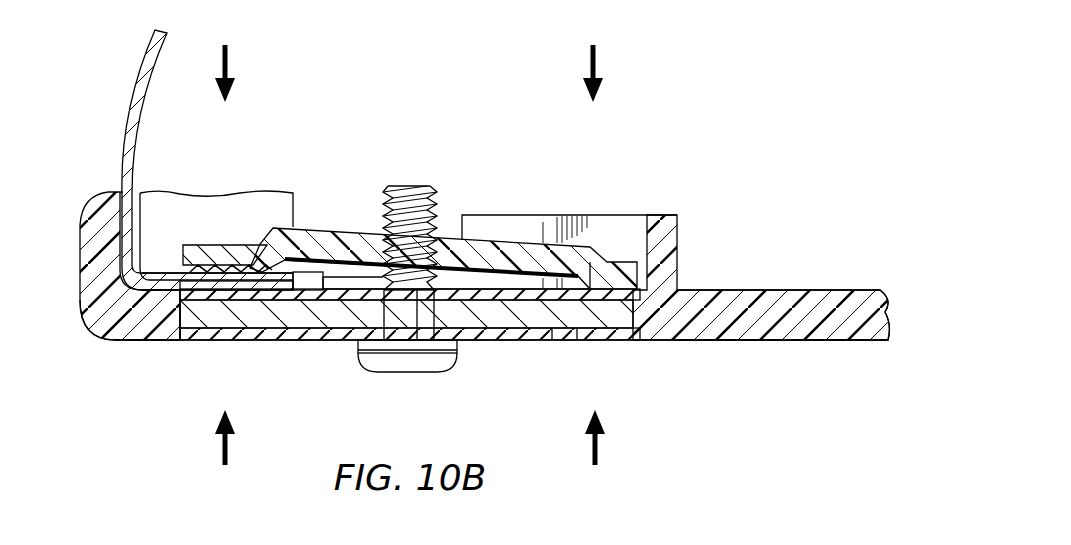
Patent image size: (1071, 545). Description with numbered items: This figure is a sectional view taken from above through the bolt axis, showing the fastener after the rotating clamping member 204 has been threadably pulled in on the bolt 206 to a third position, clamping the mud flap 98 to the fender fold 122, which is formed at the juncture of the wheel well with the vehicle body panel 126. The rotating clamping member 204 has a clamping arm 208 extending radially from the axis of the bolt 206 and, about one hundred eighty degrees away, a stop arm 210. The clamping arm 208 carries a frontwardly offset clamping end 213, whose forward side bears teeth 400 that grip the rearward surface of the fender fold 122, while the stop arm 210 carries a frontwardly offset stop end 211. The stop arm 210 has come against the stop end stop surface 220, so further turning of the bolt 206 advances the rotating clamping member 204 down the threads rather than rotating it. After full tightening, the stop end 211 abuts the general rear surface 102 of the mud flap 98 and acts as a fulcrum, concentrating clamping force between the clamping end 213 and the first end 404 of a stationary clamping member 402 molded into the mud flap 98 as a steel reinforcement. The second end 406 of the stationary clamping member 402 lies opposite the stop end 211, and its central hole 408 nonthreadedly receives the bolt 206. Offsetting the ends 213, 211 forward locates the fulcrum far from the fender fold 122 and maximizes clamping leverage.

The mud flap 98 is at (748, 343).
The general rear surface 102 is at (503, 287).
The fender fold 122 is at (163, 290).
The body panel 126 is at (122, 140).
The rotating clamping member 204 is at (333, 227).
The bolt 206 is at (410, 187).
The clamping arm 208 is at (212, 245).
The stop arm 210 is at (622, 262).
The stop end 211 is at (642, 268).
The clamping end 213 is at (167, 258).
The stop end stop surface 220 is at (592, 224).
The teeth 400 is at (268, 260).
The stationary clamping member 402 is at (515, 330).
The first end 404 is at (210, 297).
The second end 406 is at (617, 337).
The central hole 408 is at (383, 313).